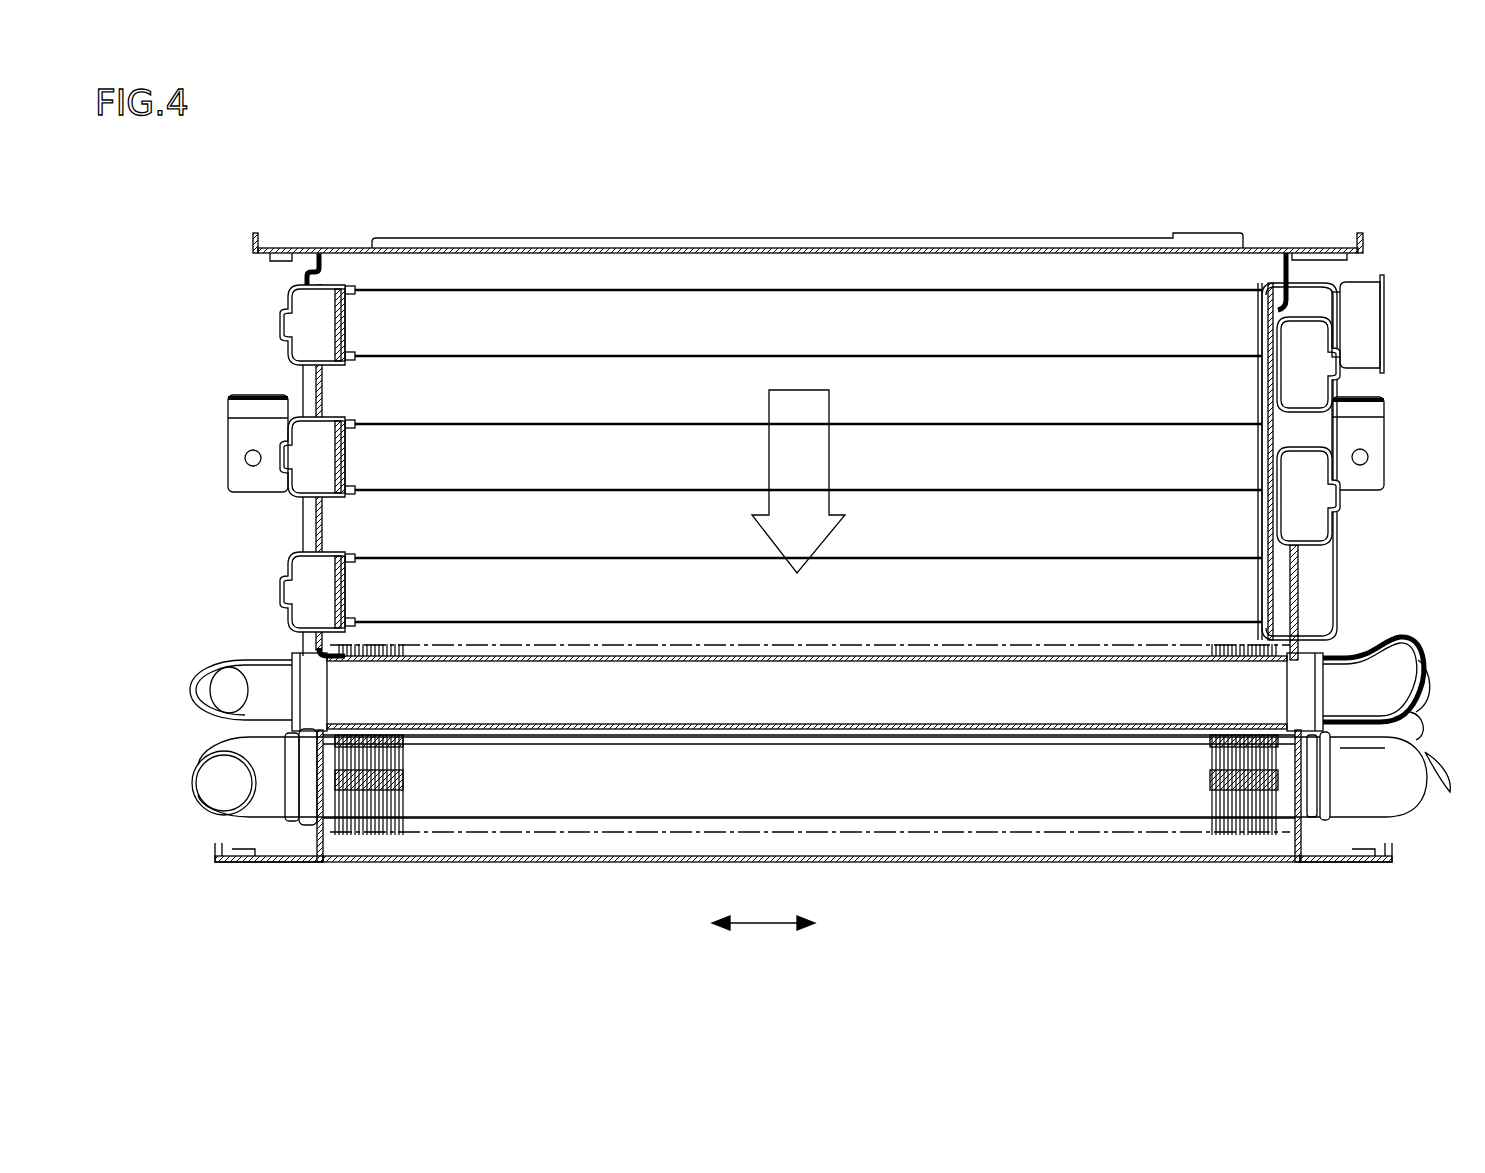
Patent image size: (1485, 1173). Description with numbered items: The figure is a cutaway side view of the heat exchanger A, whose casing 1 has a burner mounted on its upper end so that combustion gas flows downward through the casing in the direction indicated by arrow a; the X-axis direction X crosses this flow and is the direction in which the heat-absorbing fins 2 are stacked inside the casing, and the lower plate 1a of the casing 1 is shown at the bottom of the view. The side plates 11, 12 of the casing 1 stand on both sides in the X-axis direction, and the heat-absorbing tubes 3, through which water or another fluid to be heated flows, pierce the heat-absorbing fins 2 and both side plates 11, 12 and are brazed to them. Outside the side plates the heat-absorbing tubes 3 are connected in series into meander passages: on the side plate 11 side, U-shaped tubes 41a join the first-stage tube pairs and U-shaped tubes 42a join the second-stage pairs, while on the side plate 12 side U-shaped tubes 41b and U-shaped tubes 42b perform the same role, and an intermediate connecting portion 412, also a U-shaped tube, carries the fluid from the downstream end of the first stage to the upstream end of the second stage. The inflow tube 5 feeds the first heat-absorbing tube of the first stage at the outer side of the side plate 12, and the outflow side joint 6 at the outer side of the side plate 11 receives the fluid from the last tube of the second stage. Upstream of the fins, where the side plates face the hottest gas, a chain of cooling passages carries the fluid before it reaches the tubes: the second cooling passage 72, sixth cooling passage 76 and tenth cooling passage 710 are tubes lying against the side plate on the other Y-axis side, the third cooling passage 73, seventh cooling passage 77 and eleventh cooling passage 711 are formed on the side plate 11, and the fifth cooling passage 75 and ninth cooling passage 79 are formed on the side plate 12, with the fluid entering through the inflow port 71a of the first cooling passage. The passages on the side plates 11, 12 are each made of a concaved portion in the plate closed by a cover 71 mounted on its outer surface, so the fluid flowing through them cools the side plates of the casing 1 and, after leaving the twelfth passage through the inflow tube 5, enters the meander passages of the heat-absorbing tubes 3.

The heat exchanger A is at (1162, 207).
The casing 1 is at (1313, 245).
The bottom plate 1a is at (818, 857).
The heat-absorbing fins 2 is at (380, 835).
The heat-absorbing tubes 3 is at (622, 732).
The inflow tube 5 is at (1375, 650).
The outflow side joint 6 is at (212, 808).
The side plate 11 is at (300, 520).
The side plate 12 is at (1298, 580).
The U-shaped tubes 41a is at (212, 668).
The U-shaped tubes 41b is at (1418, 692).
The U-shaped tubes 42a is at (208, 760).
The U-shaped tubes 42b is at (1425, 770).
The intermediate connecting portion 412 is at (1415, 738).
The cover 71 is at (280, 328).
The inflow port 71a is at (1383, 324).
The second cooling passage 72 is at (556, 358).
The third cooling passage 73 is at (325, 337).
The fifth cooling passage 75 is at (1310, 376).
The sixth cooling passage 76 is at (556, 492).
The seventh cooling passage 77 is at (325, 469).
The ninth cooling passage 79 is at (1310, 507).
The tenth cooling passage 710 is at (703, 557).
The eleventh cooling passage 711 is at (328, 604).
The flow direction of the combustion gas a is at (822, 460).
The X-axis direction X is at (768, 927).